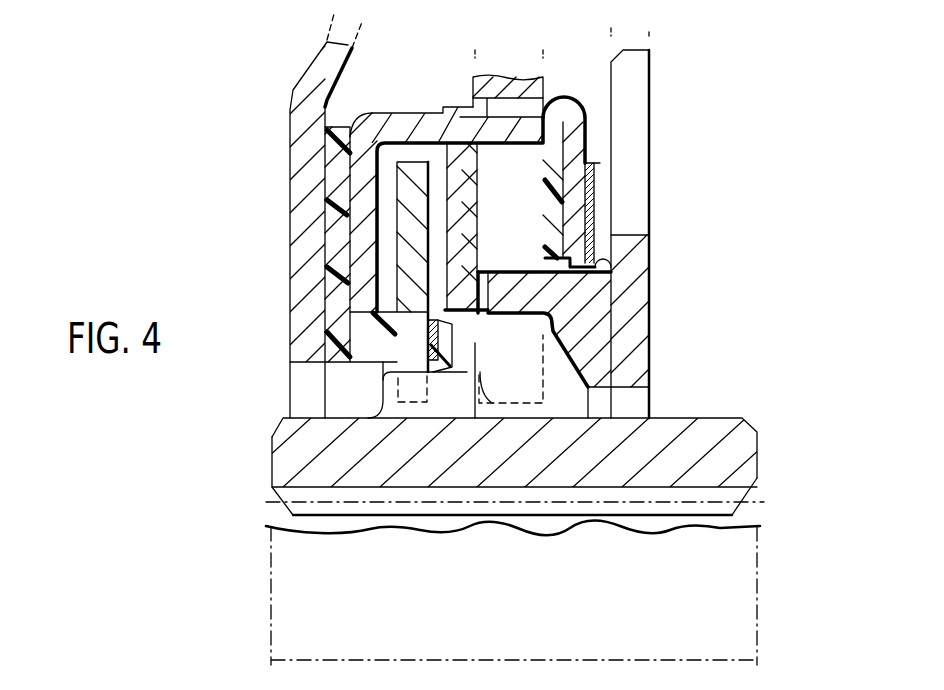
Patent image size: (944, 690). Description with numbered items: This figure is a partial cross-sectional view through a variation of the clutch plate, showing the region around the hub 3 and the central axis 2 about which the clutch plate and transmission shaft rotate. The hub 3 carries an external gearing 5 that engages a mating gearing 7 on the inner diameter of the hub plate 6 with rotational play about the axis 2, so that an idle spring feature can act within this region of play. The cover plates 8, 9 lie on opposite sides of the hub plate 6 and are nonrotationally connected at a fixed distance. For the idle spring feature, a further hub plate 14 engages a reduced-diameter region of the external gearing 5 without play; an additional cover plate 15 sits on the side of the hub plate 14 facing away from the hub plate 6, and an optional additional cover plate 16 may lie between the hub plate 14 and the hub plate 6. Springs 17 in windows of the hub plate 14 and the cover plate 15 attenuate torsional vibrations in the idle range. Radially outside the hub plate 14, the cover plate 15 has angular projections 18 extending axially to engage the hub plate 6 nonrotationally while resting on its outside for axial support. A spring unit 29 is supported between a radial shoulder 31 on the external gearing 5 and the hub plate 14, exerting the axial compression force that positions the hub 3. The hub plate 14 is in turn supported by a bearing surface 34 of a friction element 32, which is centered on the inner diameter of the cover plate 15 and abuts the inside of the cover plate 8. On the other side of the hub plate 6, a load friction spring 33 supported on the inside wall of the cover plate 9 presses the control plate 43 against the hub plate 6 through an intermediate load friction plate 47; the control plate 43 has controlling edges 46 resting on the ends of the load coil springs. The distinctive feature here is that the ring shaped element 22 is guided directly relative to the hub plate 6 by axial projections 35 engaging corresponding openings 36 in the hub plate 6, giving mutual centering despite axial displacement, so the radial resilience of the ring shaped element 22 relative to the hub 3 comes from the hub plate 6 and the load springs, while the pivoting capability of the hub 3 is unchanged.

The central axis 2 is at (770, 656).
The hub 3 is at (738, 462).
The external gearing 5 is at (566, 378).
The hub plate 6 is at (548, 211).
The mating gearing 7 is at (476, 343).
The cover plate 8 is at (320, 82).
The cover plate 9 is at (640, 54).
The hub plate 14 is at (408, 177).
The additional cover plate 15 is at (367, 153).
The additional cover plate 16 is at (458, 212).
The springs 17 is at (390, 283).
The angular projections 18 is at (585, 128).
The ring shaped element 22 is at (600, 323).
The spring unit 29 is at (440, 392).
The radial shoulder 31 is at (455, 392).
The friction element 32 is at (337, 250).
The load friction spring 33 is at (598, 226).
The bearing surface 34 is at (395, 405).
The projections 35 is at (520, 292).
The openings 36 is at (510, 330).
The control plate 43 is at (565, 170).
The controlling edges 46 is at (513, 105).
The load friction plate 47 is at (587, 165).